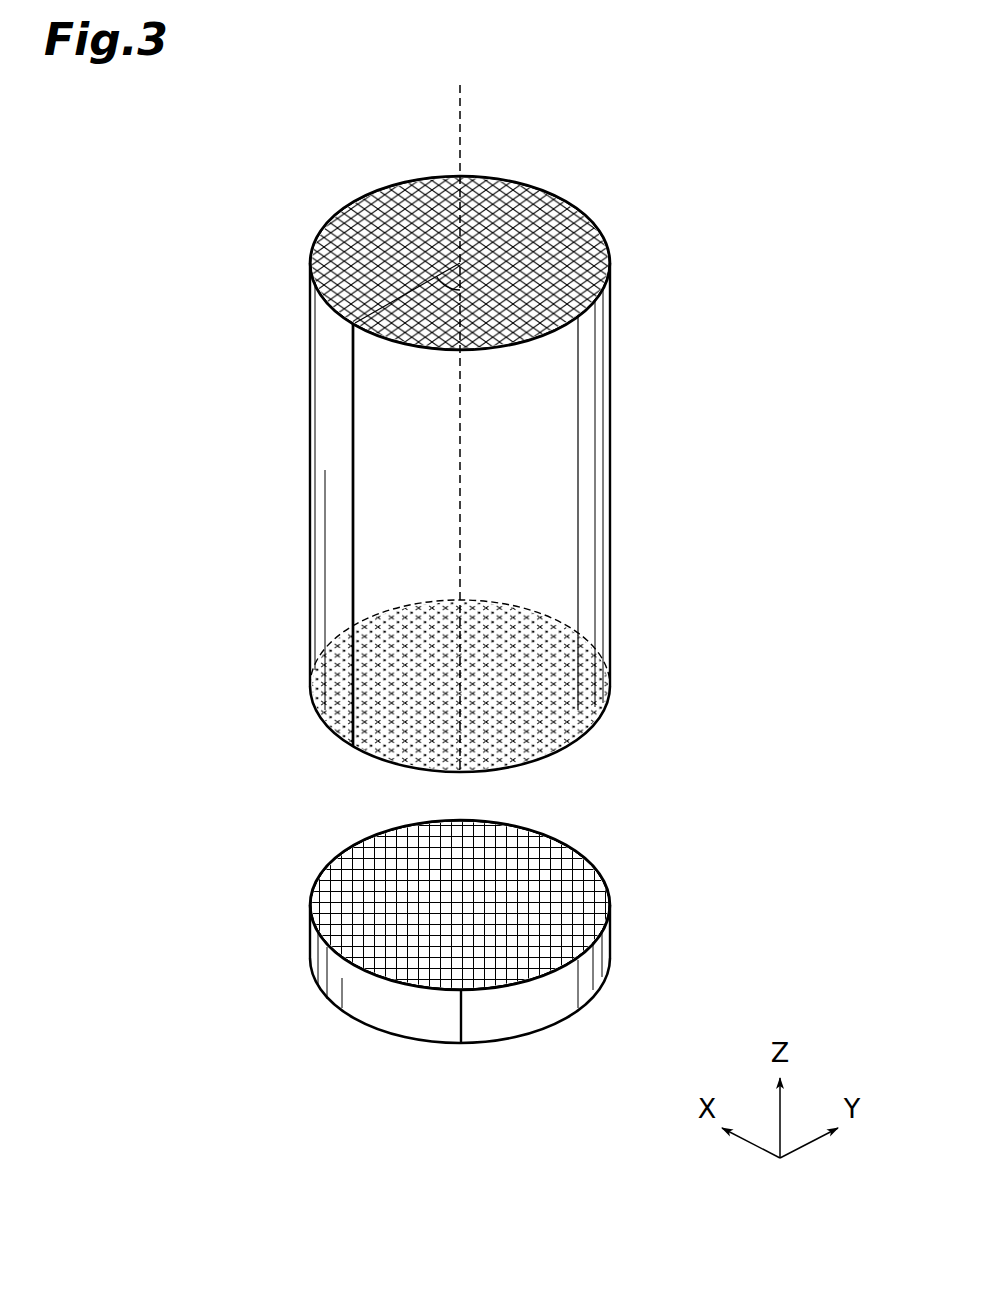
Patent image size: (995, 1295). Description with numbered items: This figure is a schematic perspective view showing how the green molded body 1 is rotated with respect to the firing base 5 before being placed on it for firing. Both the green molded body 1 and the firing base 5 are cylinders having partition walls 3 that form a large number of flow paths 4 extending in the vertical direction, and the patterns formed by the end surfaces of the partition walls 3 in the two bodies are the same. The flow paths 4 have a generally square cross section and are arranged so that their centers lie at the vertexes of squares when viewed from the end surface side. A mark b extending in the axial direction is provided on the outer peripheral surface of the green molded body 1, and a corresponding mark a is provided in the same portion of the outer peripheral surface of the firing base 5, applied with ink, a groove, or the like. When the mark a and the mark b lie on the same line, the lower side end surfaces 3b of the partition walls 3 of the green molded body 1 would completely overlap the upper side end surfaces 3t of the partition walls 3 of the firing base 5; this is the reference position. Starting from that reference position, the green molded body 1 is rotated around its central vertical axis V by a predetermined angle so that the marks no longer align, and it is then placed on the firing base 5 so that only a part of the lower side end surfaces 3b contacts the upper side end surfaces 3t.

The green molded body 1 is at (646, 391).
The partition walls 3 is at (530, 300).
The flow paths 4 is at (488, 245).
The lower side end surfaces 3b is at (387, 722).
The upper side end surfaces 3t is at (375, 876).
The firing base 5 is at (648, 923).
The mark a is at (465, 1015).
The mark b is at (353, 483).
The central axis V is at (460, 117).